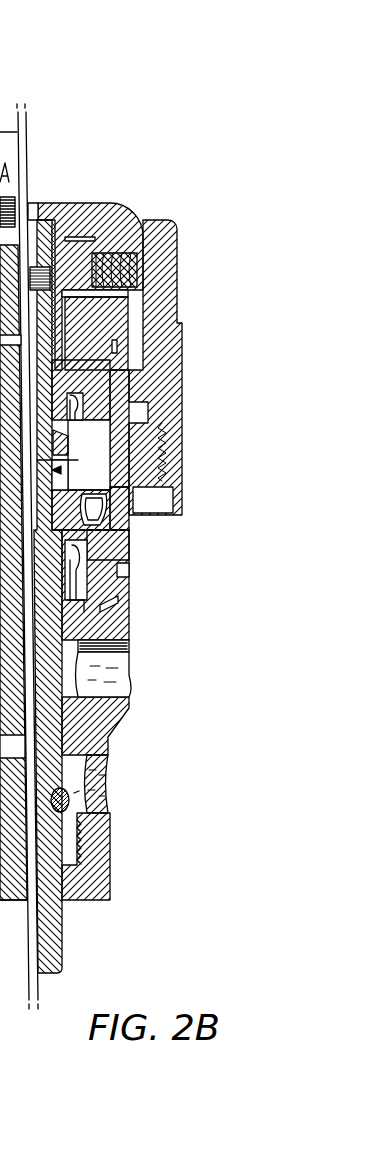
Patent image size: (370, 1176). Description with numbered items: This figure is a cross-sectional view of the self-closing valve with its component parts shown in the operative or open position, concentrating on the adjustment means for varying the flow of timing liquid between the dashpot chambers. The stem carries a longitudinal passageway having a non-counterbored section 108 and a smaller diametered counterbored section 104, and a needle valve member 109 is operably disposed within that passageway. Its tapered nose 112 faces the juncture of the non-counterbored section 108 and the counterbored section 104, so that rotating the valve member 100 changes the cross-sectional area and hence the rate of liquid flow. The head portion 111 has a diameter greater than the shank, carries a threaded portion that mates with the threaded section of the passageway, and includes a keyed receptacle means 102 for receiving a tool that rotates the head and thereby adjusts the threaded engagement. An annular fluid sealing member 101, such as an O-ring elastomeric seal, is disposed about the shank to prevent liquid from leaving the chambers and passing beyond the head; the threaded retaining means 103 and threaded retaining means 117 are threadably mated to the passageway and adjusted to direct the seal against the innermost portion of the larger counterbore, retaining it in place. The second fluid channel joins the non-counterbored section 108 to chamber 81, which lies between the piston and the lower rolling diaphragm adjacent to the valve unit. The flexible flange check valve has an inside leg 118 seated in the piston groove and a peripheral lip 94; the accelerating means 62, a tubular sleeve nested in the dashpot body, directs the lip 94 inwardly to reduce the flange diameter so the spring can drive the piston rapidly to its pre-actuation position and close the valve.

The keyed receptacle means 102 is at (15, 200).
The head portion 111 is at (52, 368).
The threaded retaining means 103 is at (63, 307).
The threaded retaining means 117 is at (72, 333).
The annular fluid sealing member 101 is at (45, 421).
The chamber 81 is at (92, 450).
The needle valve member 109 is at (37, 459).
The valve member 100 is at (60, 471).
The peripheral lip 94 is at (133, 517).
The accelerating means 62 is at (130, 515).
The tapered nose 112 is at (129, 533).
The smaller diametered counterbored section 104 is at (85, 538).
The inside leg 118 is at (112, 570).
The non-counterbored section 108 is at (90, 592).